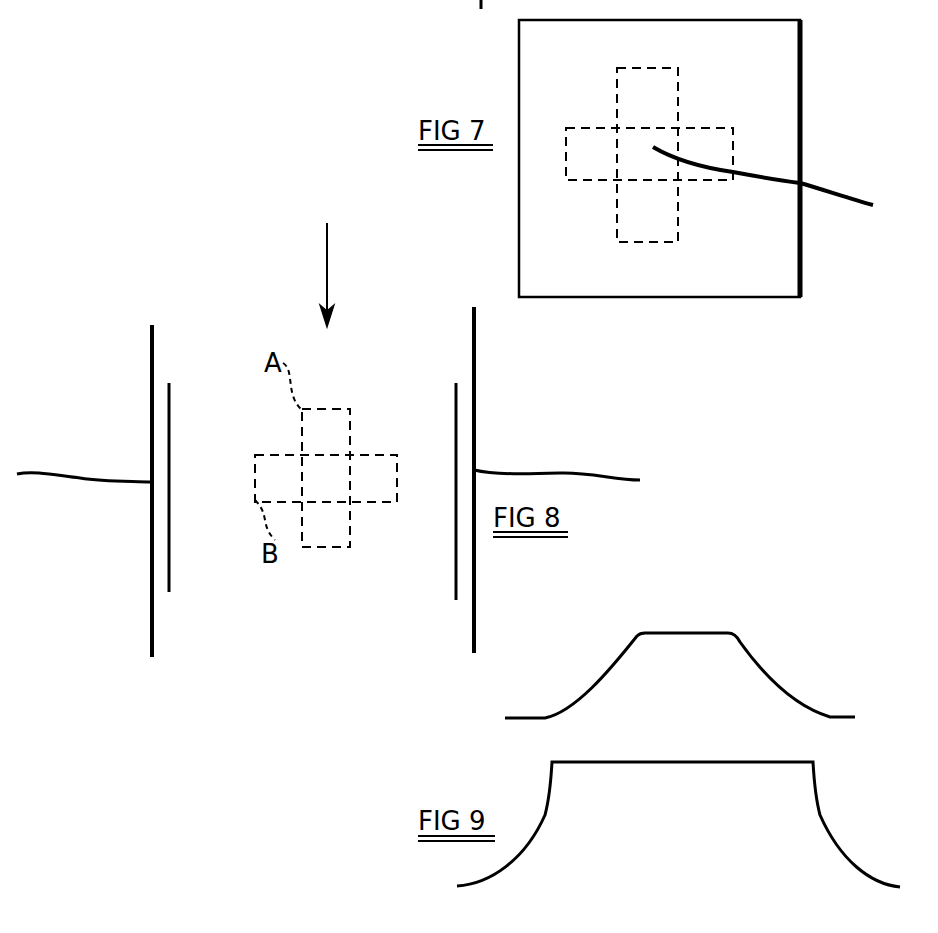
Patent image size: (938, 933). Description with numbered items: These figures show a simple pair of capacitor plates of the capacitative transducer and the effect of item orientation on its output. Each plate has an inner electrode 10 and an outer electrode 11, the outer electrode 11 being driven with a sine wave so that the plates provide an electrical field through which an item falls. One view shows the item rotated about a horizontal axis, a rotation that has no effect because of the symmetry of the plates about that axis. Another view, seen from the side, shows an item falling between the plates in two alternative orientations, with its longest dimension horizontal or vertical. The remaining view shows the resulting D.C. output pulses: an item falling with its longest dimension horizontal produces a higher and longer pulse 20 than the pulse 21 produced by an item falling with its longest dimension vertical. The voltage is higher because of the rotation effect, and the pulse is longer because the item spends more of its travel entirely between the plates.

In FIG. 8, the inner electrode 10 is at (169, 550).
In FIG. 7, the outer electrode 11 is at (797, 138).
In FIG. 8, the outer electrode 11 is at (152, 533).
In FIG. 9, the D.C. output pulse 20 is at (618, 762).
In FIG. 9, the D.C. output pulse 21 is at (627, 655).